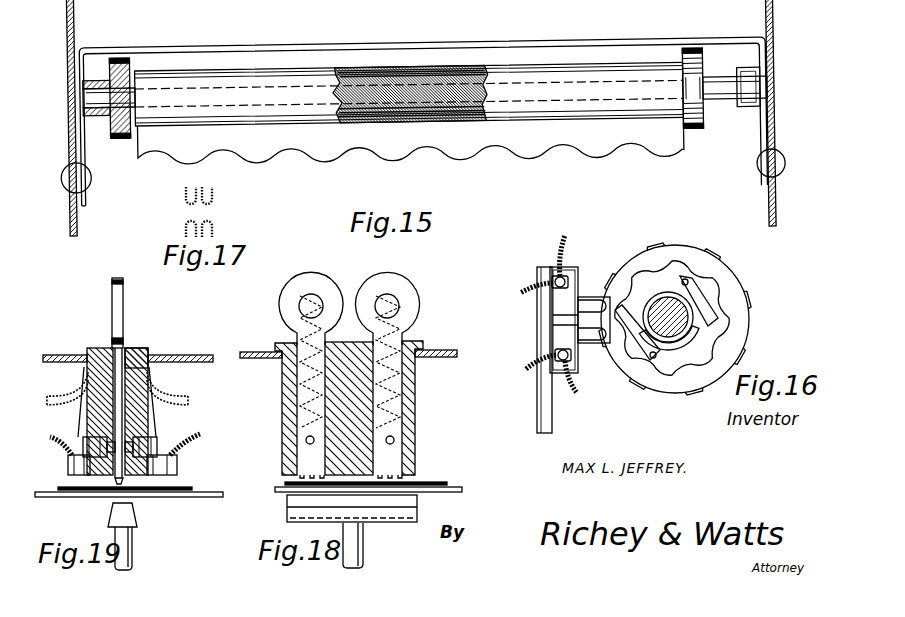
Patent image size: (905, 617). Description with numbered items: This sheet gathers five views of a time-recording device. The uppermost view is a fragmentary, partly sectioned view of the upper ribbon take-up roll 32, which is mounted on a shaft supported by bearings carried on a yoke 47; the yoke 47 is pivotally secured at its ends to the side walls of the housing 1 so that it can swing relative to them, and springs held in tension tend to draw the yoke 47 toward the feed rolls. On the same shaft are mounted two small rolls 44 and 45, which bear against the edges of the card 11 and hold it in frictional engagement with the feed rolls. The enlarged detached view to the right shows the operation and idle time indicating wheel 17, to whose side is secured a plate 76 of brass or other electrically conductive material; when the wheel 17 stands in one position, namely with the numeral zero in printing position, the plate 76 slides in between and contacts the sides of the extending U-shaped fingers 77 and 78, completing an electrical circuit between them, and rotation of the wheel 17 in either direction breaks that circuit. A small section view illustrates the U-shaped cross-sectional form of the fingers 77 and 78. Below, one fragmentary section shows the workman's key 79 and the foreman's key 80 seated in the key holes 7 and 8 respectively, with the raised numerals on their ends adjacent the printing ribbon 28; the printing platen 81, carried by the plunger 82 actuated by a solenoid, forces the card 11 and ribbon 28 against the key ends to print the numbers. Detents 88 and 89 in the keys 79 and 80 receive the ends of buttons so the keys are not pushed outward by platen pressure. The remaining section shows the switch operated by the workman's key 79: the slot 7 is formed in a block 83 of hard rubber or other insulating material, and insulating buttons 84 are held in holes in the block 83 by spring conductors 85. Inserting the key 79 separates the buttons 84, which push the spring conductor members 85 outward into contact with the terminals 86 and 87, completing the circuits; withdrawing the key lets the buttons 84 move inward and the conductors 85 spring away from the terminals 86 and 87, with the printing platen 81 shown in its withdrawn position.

In FIG. 15, the housing 1 is at (67, 40).
In FIG. 19, the housing 1 is at (186, 355).
In FIG. 18, the housing 1 is at (242, 352).
In FIG. 19, the key hole (slot) 7 is at (128, 350).
In FIG. 18, the key hole (slot) 7 is at (412, 342).
In FIG. 18, the key hole 8 is at (291, 345).
In FIG. 19, the card 11 is at (205, 497).
In FIG. 18, the card 11 is at (462, 489).
In FIG. 16, the operation indicating wheel 17 is at (699, 228).
In FIG. 19, the printing ribbon 28 is at (190, 488).
In FIG. 18, the printing ribbon 28 is at (427, 481).
In FIG. 15, the upper ribbon take-up roll 32 is at (313, 83).
In FIG. 15, the roll 44 is at (695, 128).
In FIG. 15, the roll 45 is at (120, 140).
In FIG. 15, the yoke 47 is at (617, 43).
In FIG. 16, the plate 76 is at (596, 345).
In FIG. 17, the finger 77 is at (210, 193).
In FIG. 16, the finger 77 is at (588, 298).
In FIG. 17, the finger 78 is at (210, 222).
In FIG. 16, the finger 78 is at (570, 378).
In FIG. 19, the workman's key 79 is at (116, 312).
In FIG. 18, the workman's key 79 is at (400, 293).
In FIG. 18, the foreman's key 80 is at (292, 300).
In FIG. 19, the printing platen 81 is at (125, 508).
In FIG. 18, the printing platen 81 is at (292, 502).
In FIG. 19, the plunger 82 is at (133, 542).
In FIG. 18, the plunger 82 is at (363, 543).
In FIG. 19, the block 83 is at (97, 350).
In FIG. 19, the buttons 84 is at (85, 438).
In FIG. 19, the spring conductors 85 is at (84, 410).
In FIG. 19, the terminal 86 is at (177, 460).
In FIG. 19, the terminal 87 is at (70, 466).
In FIG. 18, the detent 88 is at (393, 438).
In FIG. 18, the detent 89 is at (307, 438).